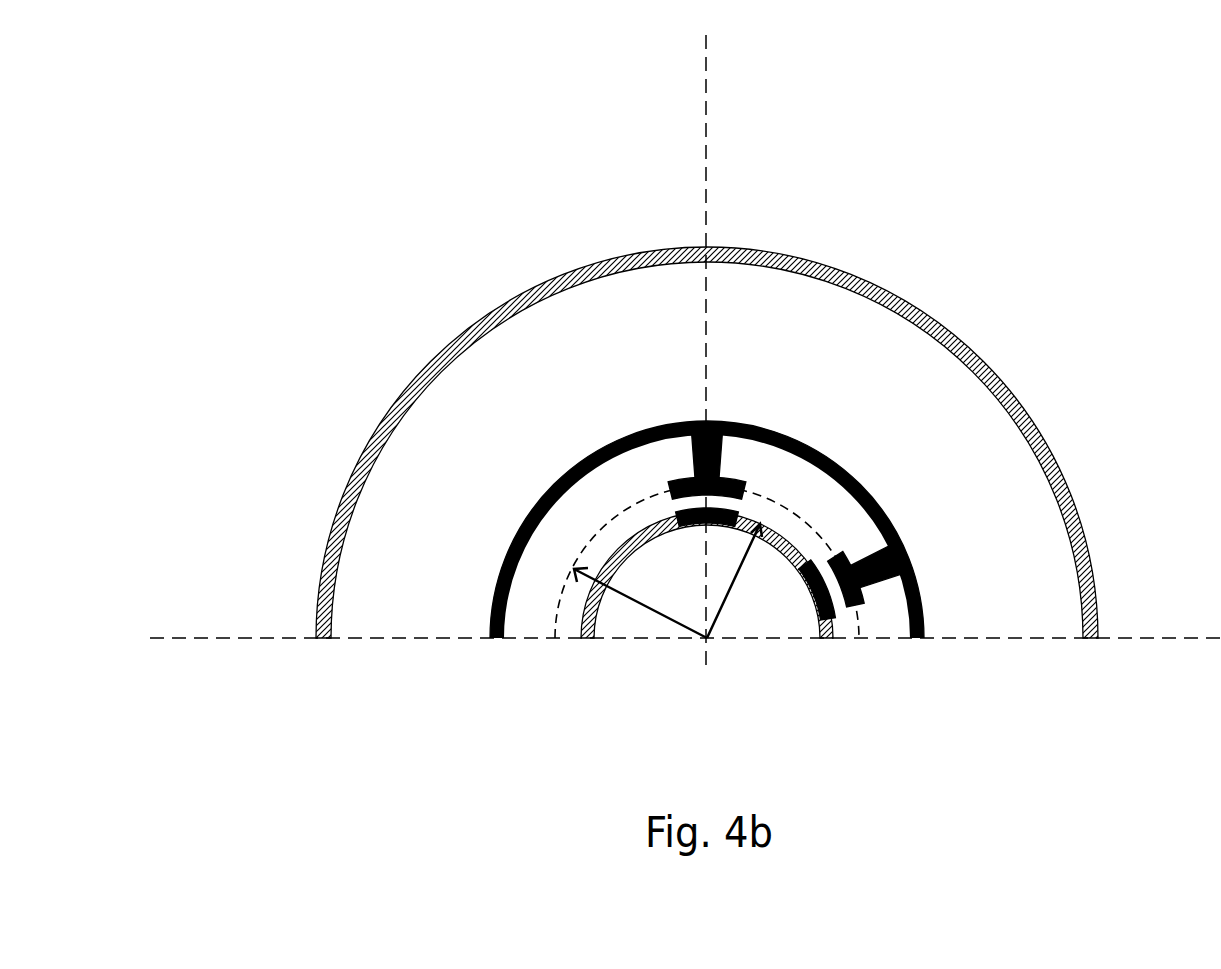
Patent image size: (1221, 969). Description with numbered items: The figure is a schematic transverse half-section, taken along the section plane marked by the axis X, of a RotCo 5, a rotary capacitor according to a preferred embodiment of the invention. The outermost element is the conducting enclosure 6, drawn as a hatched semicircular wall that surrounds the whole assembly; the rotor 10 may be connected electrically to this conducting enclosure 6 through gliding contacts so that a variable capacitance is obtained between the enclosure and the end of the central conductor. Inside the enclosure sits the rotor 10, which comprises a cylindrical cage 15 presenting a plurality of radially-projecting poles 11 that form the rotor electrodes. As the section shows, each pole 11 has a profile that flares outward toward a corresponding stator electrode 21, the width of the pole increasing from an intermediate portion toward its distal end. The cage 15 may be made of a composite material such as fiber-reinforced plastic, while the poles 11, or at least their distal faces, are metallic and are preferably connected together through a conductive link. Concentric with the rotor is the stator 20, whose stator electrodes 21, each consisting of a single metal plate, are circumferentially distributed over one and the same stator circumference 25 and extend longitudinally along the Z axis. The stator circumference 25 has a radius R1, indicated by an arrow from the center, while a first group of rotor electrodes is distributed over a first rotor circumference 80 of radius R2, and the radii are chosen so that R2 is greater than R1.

The RotCo 5 is at (811, 217).
The conducting enclosure 6 is at (627, 253).
The rotor 10 is at (569, 454).
The pole 11 is at (735, 478).
The cylindrical cage 15 is at (497, 553).
The stator 20 is at (580, 618).
The stator electrode 21 is at (675, 510).
The stator circumference 25 is at (775, 530).
The first rotor circumference 80 is at (593, 543).
The radius of the stator circumference R1 is at (727, 580).
The radius of the first rotor circumference R2 is at (648, 614).
The axis X is at (200, 637).